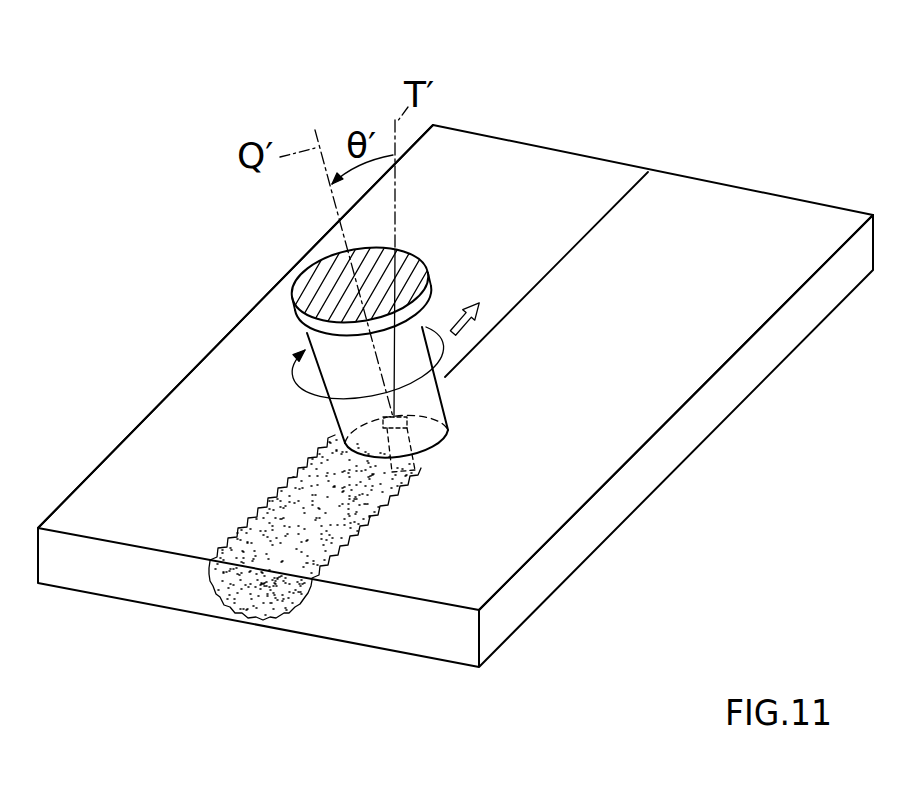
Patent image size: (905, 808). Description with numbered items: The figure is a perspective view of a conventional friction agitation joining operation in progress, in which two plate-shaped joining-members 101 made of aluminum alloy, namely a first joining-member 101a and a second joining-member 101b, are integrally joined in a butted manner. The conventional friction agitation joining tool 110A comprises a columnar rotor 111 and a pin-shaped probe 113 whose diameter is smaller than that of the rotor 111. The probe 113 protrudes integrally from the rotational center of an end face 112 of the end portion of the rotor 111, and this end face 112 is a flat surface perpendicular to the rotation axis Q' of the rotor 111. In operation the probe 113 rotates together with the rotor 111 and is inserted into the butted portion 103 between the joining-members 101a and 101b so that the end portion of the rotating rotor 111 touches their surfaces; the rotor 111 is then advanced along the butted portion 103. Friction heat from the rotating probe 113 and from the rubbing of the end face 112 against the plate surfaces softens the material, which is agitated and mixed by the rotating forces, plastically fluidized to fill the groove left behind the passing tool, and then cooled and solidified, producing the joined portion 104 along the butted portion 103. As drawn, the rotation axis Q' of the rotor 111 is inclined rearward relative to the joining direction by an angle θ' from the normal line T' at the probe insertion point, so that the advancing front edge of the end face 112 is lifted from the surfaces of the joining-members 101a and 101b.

The joining-members 101 is at (623, 61).
The joining-member 101a is at (645, 240).
The joining-member 101b is at (490, 217).
The butted portion 103 is at (548, 268).
The joined portion 104 is at (300, 520).
The friction agitation joining tool 110A is at (366, 357).
The rotor 111 is at (342, 410).
The end face 112 is at (452, 428).
The probe 113 is at (418, 473).